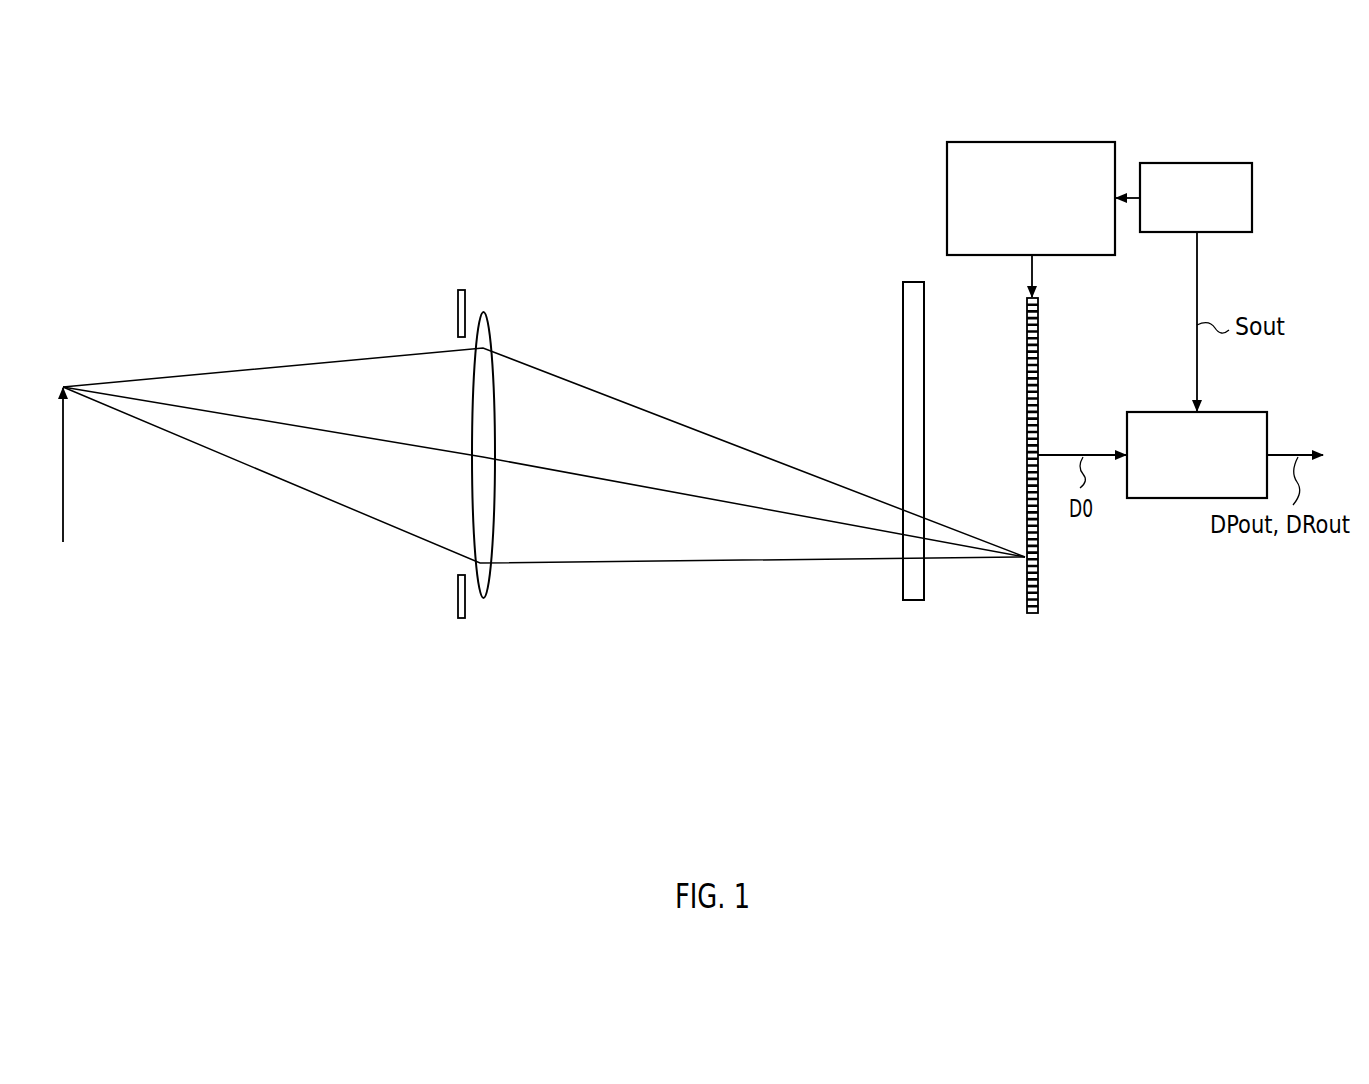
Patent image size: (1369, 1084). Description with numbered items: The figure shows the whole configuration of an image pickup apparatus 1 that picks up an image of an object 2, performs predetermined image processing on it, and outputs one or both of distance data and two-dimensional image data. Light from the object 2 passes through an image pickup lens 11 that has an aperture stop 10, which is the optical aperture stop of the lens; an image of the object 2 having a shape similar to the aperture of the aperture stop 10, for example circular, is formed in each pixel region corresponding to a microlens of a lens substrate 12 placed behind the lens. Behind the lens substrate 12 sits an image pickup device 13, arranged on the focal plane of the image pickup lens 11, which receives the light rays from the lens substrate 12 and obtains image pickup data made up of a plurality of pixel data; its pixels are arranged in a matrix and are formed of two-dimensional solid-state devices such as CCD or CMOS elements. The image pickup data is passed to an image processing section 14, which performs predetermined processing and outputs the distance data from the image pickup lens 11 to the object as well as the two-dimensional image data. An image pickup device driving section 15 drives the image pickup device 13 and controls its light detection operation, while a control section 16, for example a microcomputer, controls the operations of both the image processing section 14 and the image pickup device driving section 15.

The image pickup apparatus 1 is at (278, 215).
The object 2 is at (63, 528).
The aperture stop 10 is at (458, 618).
The image pickup lens 11 is at (483, 312).
The lens substrate 12 is at (912, 610).
The image pickup device 13 is at (1095, 580).
The image processing section 14 is at (1225, 412).
The image pickup device driving section 15 is at (1060, 142).
The control section 16 is at (1225, 163).